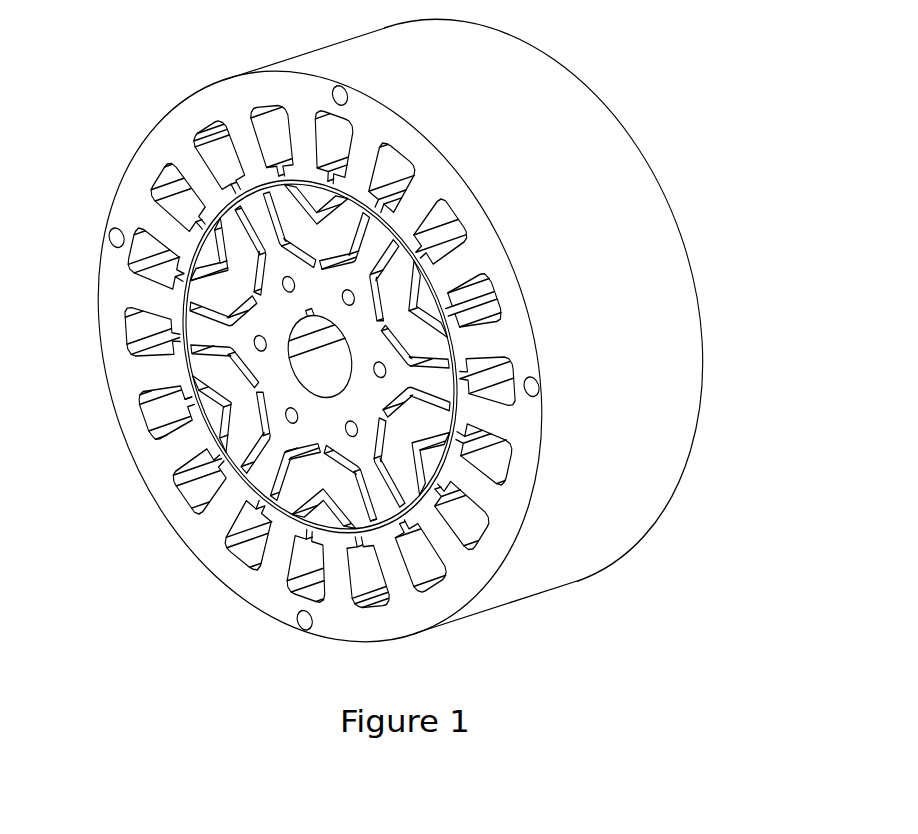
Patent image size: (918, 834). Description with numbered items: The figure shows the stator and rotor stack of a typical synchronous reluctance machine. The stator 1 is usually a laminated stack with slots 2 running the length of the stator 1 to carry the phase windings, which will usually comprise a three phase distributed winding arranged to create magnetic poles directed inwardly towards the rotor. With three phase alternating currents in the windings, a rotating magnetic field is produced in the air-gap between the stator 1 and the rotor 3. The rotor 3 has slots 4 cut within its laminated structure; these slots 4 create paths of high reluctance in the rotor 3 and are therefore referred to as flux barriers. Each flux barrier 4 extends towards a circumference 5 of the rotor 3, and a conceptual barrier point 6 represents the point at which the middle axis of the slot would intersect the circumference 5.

The stator 1 is at (607, 210).
The slots 2 is at (505, 365).
The rotor 3 is at (207, 303).
The slots 4 is at (393, 492).
The circumference 5 is at (202, 431).
The barrier point 6 is at (408, 513).